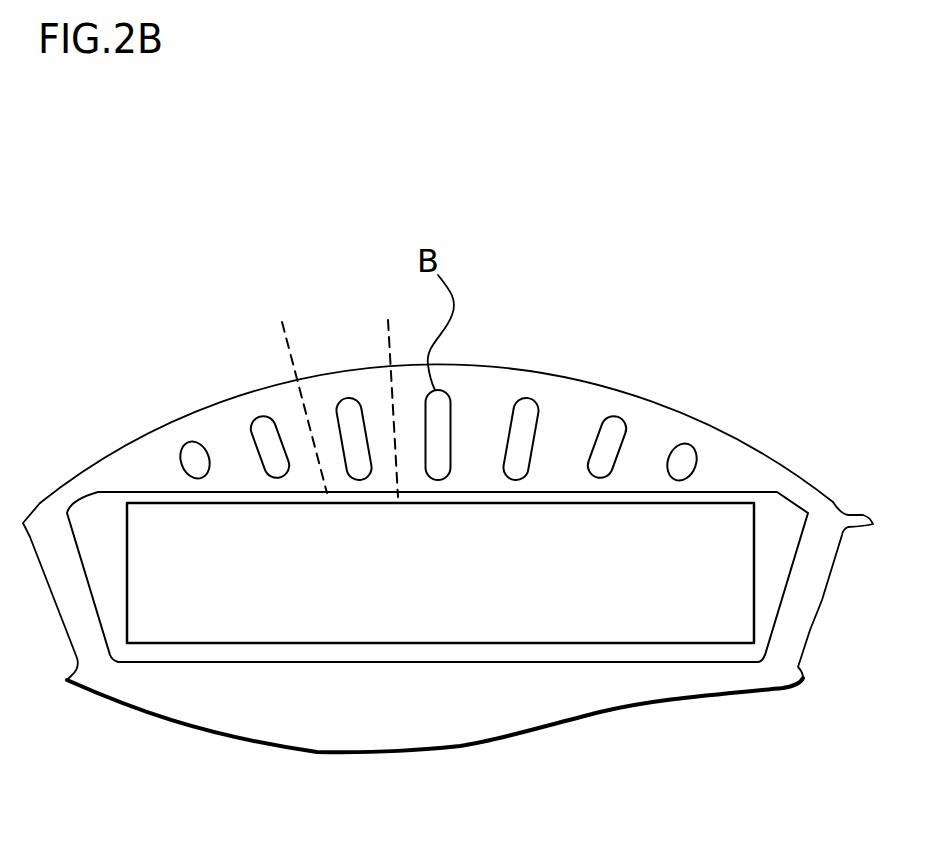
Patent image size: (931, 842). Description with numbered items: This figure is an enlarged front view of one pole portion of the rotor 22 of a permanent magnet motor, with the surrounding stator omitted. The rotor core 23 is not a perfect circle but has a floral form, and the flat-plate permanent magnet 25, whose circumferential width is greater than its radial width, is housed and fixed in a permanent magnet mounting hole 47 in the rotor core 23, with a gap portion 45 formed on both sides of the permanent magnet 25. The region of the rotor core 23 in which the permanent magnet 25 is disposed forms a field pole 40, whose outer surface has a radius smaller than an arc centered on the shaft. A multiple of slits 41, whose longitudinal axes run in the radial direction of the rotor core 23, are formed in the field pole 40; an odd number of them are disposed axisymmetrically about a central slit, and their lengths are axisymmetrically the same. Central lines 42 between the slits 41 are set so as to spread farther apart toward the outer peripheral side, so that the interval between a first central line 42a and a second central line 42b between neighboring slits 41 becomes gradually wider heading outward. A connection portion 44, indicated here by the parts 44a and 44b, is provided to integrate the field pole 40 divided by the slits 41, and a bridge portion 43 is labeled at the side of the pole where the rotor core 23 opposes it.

The rotor 22 is at (727, 398).
The rotor core 23 is at (578, 415).
The permanent magnet 25 is at (692, 532).
The field pole 40 is at (487, 388).
The slit 41 is at (260, 417).
The central lines 42 is at (352, 137).
The first central line 42a is at (288, 340).
The second central line 42b is at (388, 320).
The bridge portion 43 is at (818, 550).
The connection portion 44 is at (648, 185).
The upper edge portion 44a is at (530, 392).
The lower edge portion 44b is at (507, 487).
The gap portion 45 is at (102, 525).
The permanent magnet mounting hole 47 is at (240, 491).